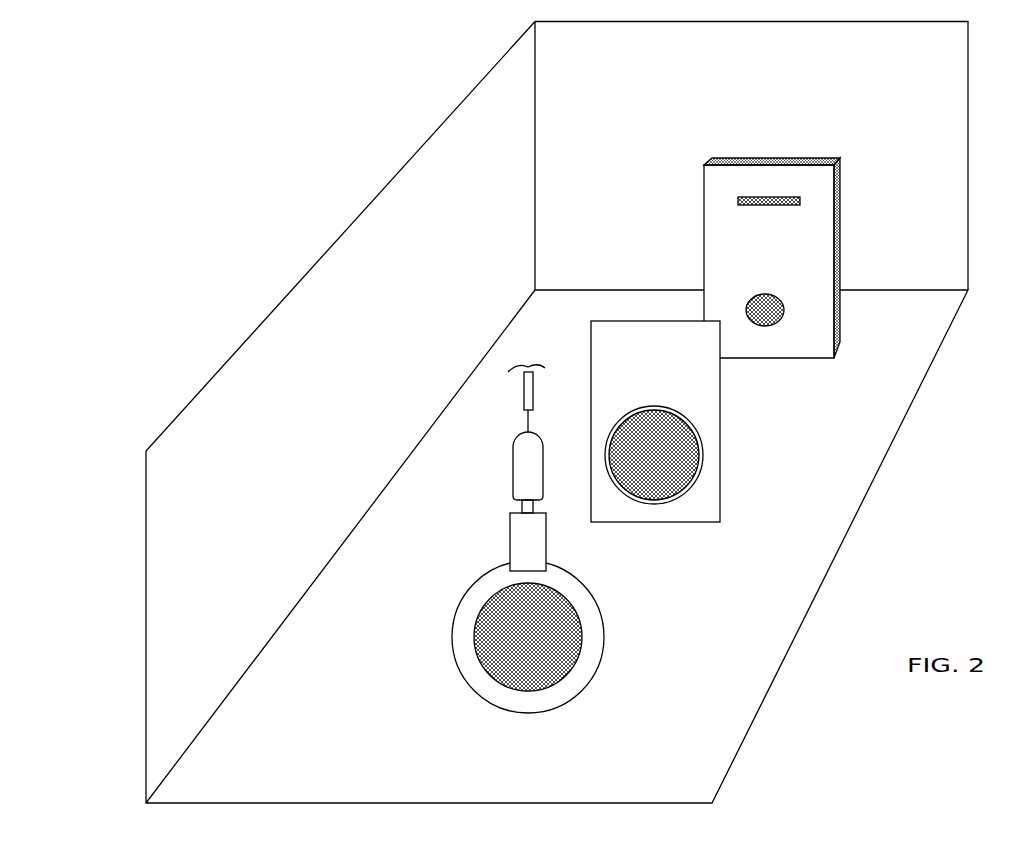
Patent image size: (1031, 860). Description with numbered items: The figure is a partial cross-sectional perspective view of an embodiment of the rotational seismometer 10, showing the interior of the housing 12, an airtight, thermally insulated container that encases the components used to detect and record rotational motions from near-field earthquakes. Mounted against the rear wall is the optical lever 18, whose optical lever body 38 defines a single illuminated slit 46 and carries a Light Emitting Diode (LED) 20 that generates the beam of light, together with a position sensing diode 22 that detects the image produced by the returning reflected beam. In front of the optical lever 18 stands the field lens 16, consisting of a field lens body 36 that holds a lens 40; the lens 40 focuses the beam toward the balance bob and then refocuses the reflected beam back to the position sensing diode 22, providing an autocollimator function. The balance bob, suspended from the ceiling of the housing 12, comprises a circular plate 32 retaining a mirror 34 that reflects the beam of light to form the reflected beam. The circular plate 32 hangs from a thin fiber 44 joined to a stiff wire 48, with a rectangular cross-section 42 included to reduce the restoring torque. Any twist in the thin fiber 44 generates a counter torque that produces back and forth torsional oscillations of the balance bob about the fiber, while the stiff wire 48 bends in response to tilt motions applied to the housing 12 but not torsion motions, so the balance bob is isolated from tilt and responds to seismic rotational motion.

The rotational seismometer 10 is at (539, 413).
The housing 12 is at (208, 440).
The field lens 16 is at (690, 446).
The optical lever 18 is at (645, 408).
The Light Emitting Diode (LED) 20 is at (752, 182).
The position sensing diode 22 is at (803, 327).
The circular plate 32 is at (585, 672).
The mirror 34 is at (492, 628).
The field lens body 36 is at (692, 507).
The optical lever body 38 is at (830, 235).
The lens 40 is at (698, 440).
The rectangular cross-section 42 is at (513, 463).
The thin fiber 44 is at (524, 422).
The illuminated slit 46 is at (782, 195).
The stiff wire 48 is at (524, 398).